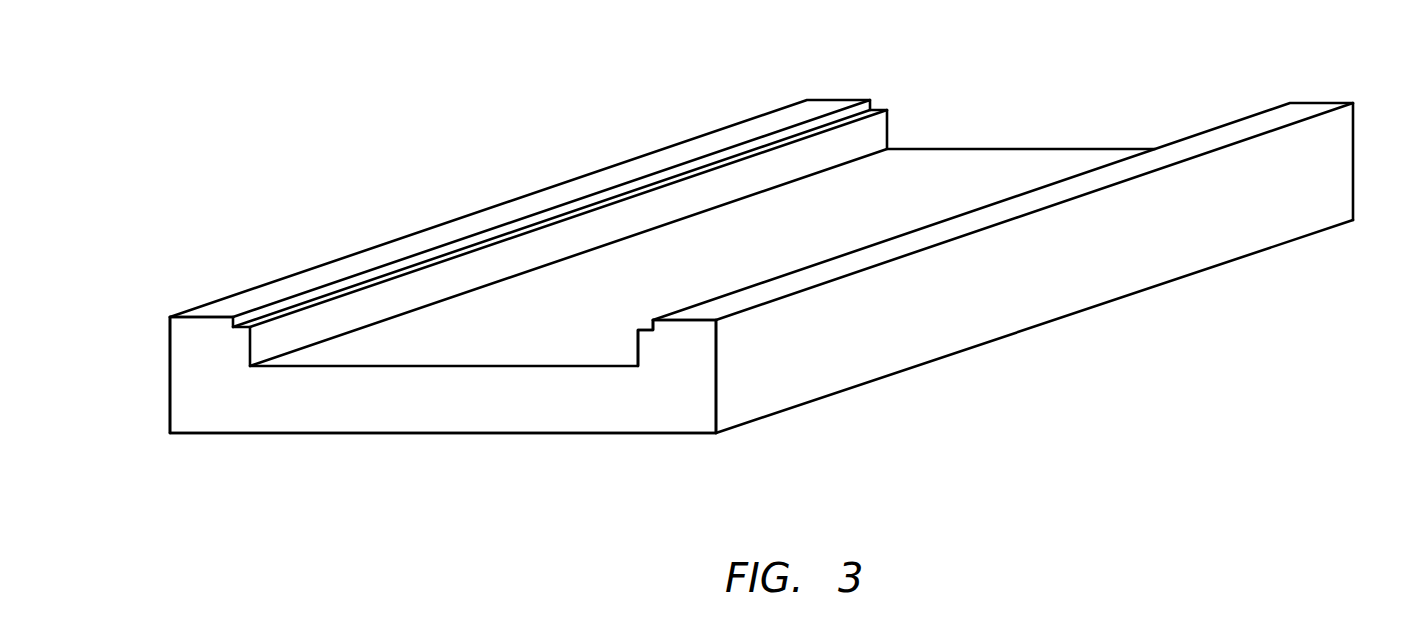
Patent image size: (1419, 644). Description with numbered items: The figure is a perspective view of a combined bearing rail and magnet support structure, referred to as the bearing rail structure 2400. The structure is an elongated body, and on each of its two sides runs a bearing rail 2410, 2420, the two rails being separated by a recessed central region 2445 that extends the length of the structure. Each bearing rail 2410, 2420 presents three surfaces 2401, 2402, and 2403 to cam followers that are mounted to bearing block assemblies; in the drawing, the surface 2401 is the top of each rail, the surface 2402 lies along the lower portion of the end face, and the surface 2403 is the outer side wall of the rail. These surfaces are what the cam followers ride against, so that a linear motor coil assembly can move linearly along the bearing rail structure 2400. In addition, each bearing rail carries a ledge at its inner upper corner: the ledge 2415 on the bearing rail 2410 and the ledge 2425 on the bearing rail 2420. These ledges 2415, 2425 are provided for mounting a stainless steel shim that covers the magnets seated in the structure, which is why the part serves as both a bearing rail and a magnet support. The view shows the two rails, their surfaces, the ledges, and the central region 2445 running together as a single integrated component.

The bearing rail structure 2400 is at (389, 445).
The surface 2401 is at (198, 329).
The surface 2402 is at (233, 422).
The surface 2403 is at (159, 360).
The bearing rail 2410 is at (1302, 109).
The ledge 2415 is at (638, 312).
The bearing rail 2420 is at (824, 101).
The ledge 2425 is at (287, 296).
The recessed floor surface 2445 is at (953, 169).